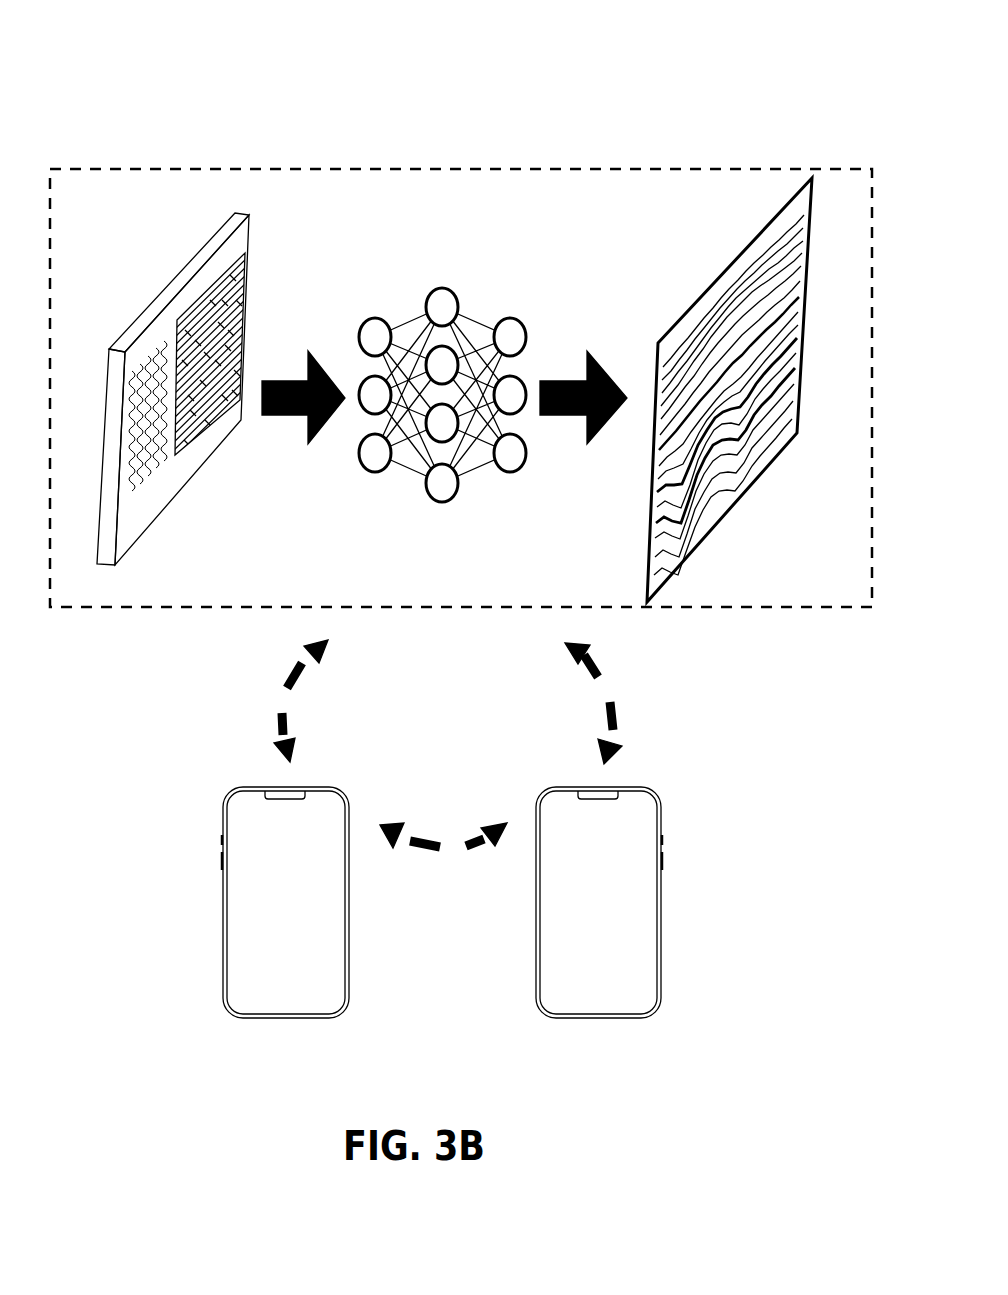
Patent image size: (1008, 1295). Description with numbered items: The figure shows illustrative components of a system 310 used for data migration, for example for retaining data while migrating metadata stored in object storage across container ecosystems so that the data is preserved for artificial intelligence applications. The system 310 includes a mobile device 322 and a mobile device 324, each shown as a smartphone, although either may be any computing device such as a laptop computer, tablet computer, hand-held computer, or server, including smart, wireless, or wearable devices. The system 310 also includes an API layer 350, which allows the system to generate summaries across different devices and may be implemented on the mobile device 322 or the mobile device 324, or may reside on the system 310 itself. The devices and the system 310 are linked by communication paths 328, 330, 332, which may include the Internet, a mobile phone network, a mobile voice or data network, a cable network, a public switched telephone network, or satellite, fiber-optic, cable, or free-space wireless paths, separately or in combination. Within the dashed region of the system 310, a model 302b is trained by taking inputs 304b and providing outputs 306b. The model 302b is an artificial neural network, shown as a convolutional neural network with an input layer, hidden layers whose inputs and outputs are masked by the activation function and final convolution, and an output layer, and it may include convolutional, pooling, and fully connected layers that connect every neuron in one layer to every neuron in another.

The system 310 is at (431, 80).
The API layer 350 is at (566, 145).
The model 302b is at (424, 252).
The inputs 304b is at (178, 513).
The outputs 306b is at (764, 510).
The mobile device 322 is at (203, 882).
The mobile device 324 is at (672, 887).
The communication path 328 is at (263, 685).
The communication path 330 is at (638, 691).
The communication path 332 is at (431, 866).